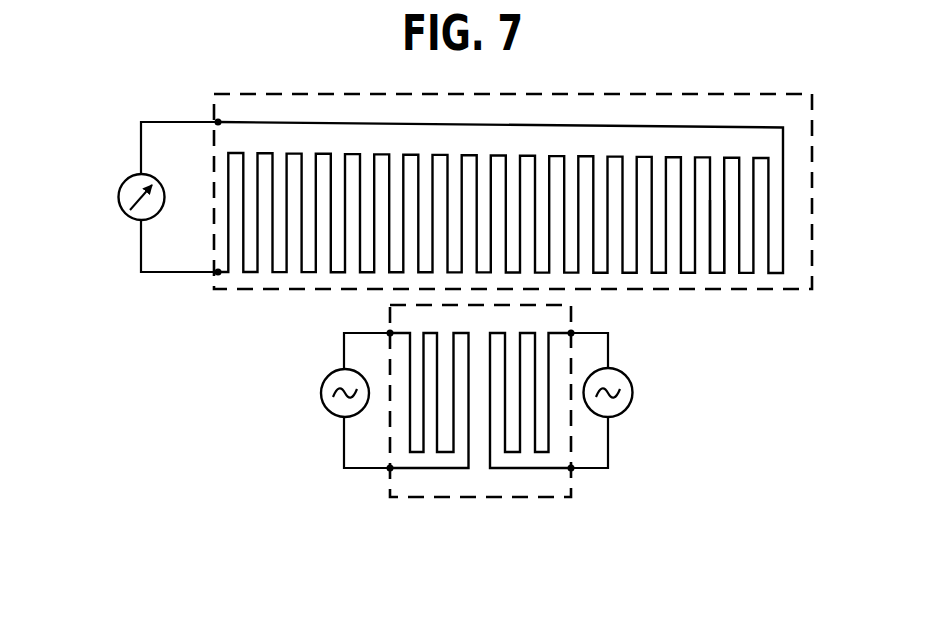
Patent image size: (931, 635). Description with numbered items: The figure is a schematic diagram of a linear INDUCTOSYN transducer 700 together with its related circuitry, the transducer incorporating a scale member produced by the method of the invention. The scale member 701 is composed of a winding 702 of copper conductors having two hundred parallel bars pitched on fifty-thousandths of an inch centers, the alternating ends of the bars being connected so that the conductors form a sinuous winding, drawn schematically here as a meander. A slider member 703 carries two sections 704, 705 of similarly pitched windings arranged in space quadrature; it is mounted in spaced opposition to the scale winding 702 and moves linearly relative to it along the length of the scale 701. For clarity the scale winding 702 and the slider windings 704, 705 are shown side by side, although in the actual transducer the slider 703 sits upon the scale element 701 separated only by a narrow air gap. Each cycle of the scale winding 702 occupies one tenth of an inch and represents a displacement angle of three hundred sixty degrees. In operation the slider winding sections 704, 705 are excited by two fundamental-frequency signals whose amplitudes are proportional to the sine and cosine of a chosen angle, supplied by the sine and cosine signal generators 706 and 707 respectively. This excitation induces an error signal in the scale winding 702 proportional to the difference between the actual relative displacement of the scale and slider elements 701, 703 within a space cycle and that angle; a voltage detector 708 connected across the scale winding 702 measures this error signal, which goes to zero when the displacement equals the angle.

The linear INDUCTOSYN transducer 700 is at (658, 89).
The scale member 701 is at (383, 94).
The winding 702 is at (717, 275).
The slider member 703 is at (415, 497).
The slider winding section 704 is at (447, 455).
The slider winding section 705 is at (541, 453).
The sine signal generator 706 is at (321, 392).
The cosine signal generator 707 is at (633, 388).
The voltage detector 708 is at (118, 194).